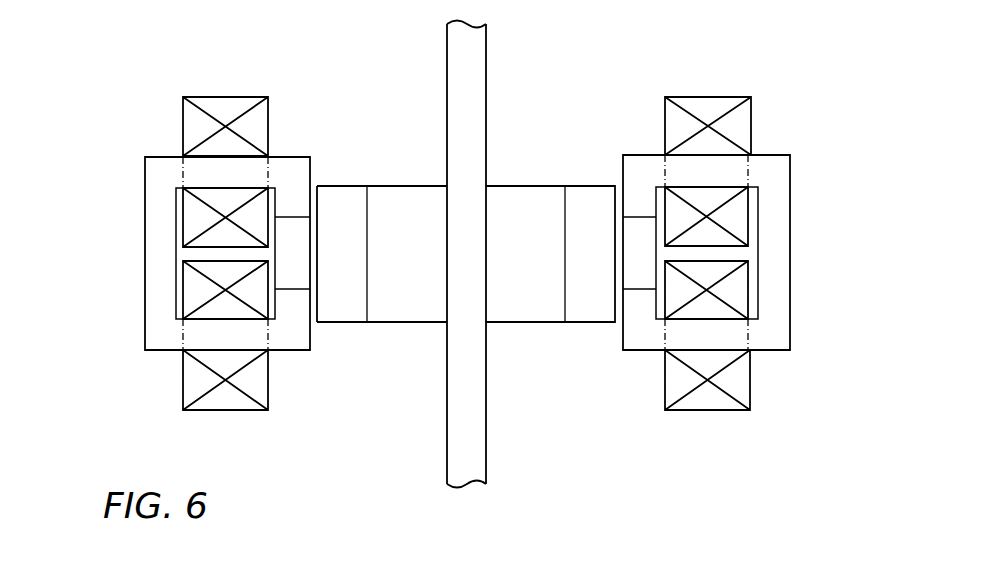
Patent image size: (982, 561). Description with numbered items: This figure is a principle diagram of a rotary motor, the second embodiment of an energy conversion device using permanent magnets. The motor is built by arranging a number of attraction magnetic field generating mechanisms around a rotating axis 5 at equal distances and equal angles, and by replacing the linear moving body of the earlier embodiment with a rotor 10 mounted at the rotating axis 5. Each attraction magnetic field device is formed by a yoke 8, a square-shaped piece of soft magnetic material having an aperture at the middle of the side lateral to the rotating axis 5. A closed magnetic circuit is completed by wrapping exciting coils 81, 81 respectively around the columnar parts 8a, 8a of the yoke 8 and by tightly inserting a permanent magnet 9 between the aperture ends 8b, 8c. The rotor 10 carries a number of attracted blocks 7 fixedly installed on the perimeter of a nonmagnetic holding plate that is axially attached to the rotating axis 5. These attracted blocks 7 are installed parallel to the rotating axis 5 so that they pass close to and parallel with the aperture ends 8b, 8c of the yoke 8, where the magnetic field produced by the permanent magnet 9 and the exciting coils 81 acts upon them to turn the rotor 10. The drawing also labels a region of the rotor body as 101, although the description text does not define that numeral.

The rotating axis 5 is at (482, 80).
The attracted blocks 7 is at (343, 324).
The yoke 8 is at (142, 283).
The columnar parts 8a is at (190, 172).
The aperture end 8b is at (293, 224).
The aperture end 8c is at (293, 296).
The permanent magnet 9 is at (293, 257).
The rotor 10 is at (392, 326).
The exciting coils 81 is at (225, 104).
The rotor body 101 is at (530, 200).